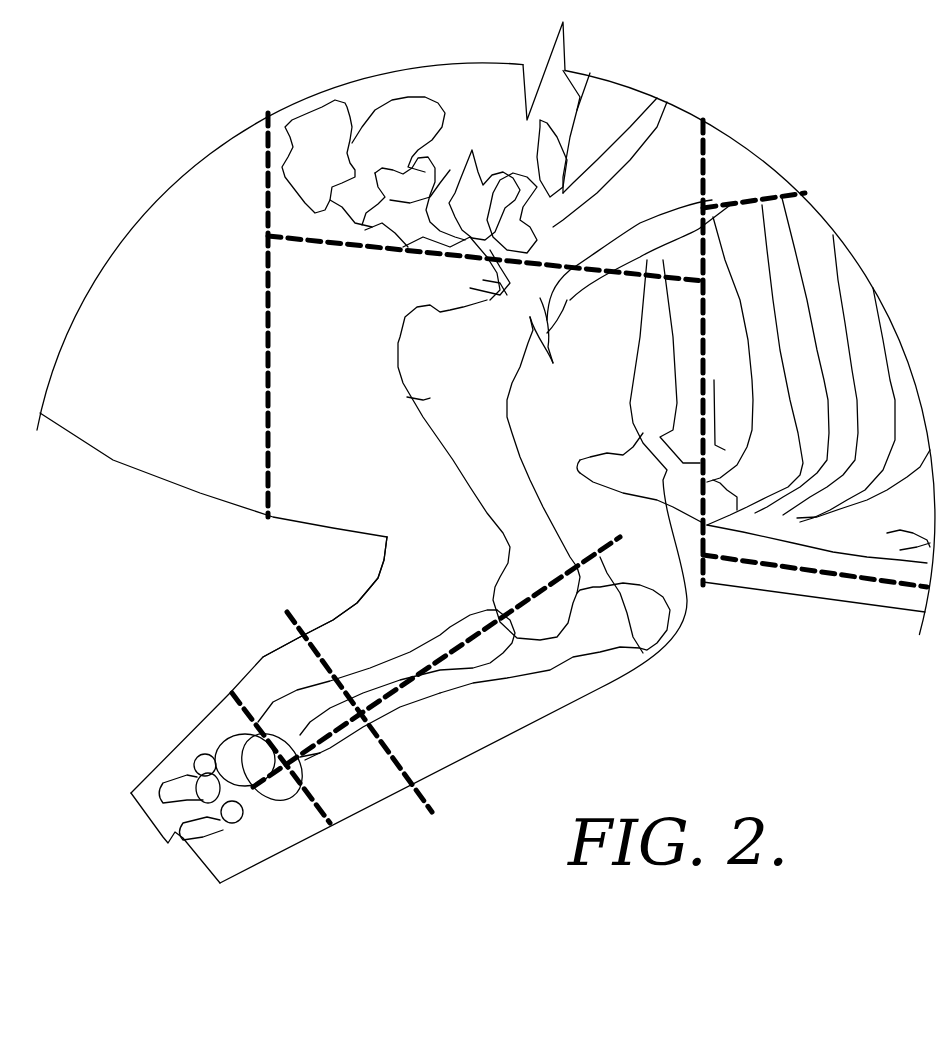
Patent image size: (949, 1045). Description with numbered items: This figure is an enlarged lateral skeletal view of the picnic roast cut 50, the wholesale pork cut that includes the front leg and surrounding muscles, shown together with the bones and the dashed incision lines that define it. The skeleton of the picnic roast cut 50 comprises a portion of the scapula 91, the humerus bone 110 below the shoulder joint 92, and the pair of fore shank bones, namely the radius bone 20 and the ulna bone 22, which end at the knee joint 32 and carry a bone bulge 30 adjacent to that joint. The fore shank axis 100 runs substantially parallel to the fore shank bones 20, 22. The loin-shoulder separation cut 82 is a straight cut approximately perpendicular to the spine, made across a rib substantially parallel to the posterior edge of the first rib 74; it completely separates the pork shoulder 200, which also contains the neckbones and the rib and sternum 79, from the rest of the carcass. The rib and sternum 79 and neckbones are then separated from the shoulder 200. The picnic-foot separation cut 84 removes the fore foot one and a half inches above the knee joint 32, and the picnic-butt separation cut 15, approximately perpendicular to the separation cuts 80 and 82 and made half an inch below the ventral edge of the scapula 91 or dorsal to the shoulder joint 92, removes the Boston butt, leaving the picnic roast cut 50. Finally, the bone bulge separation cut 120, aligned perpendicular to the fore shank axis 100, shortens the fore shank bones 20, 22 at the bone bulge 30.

The picnic-butt separation cut 15 is at (290, 243).
The radius bone 20 is at (490, 647).
The ulna bone 22 is at (522, 660).
The bone bulge 30 is at (380, 720).
The knee joint 32 is at (245, 773).
The picnic roast cut 50 is at (385, 580).
The first rib 74 is at (688, 610).
The rib and sternum 79 is at (795, 545).
The separation cut 80 is at (267, 143).
The loin-shoulder separation cut 82 is at (708, 145).
The picnic-foot separation cut 84 is at (243, 720).
The scapula 91 is at (470, 288).
The shoulder joint 92 is at (553, 363).
The fore shank axis 100 is at (643, 653).
The humerus bone 110 is at (417, 378).
The bone bulge separation cut 120 is at (287, 627).
The pork shoulder 200 is at (130, 634).